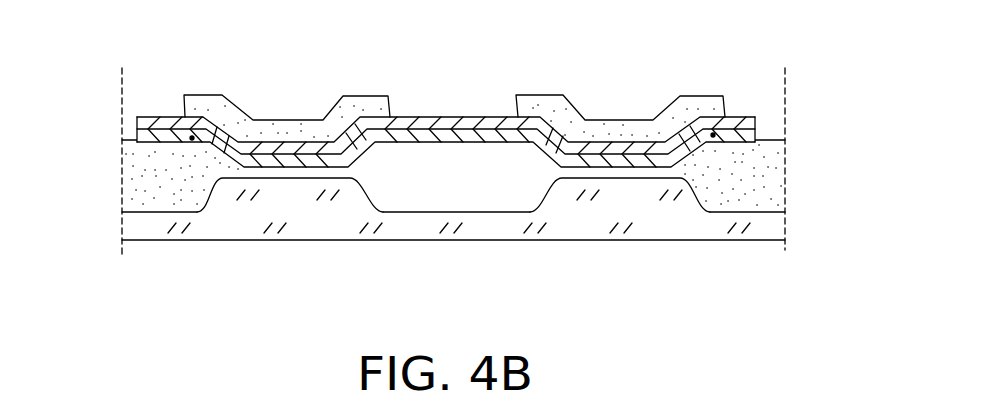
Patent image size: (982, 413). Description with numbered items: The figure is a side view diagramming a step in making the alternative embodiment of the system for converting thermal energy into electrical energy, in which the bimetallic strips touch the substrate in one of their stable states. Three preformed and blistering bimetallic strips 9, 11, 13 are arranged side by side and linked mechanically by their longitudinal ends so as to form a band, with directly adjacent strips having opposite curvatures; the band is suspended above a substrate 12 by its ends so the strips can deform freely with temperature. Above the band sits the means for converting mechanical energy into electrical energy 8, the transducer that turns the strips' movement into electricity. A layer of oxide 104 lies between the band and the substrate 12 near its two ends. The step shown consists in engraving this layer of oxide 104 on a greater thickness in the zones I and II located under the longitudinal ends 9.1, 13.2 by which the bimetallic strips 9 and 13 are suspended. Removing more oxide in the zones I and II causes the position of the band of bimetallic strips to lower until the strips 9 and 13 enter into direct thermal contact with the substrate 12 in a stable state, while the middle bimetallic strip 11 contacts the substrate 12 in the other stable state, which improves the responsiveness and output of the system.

The means for converting mechanical energy into electrical energy 8 is at (289, 115).
The bimetallic strip 9 is at (283, 172).
The longitudinal end 9.1 is at (137, 133).
The bimetallic strip 11 is at (452, 142).
The substrate 12 is at (773, 228).
The bimetallic strip 13 is at (633, 172).
The longitudinal end 13.2 is at (745, 120).
The layer of oxide 104 is at (143, 165).
The zone I is at (192, 138).
The zone II is at (713, 135).